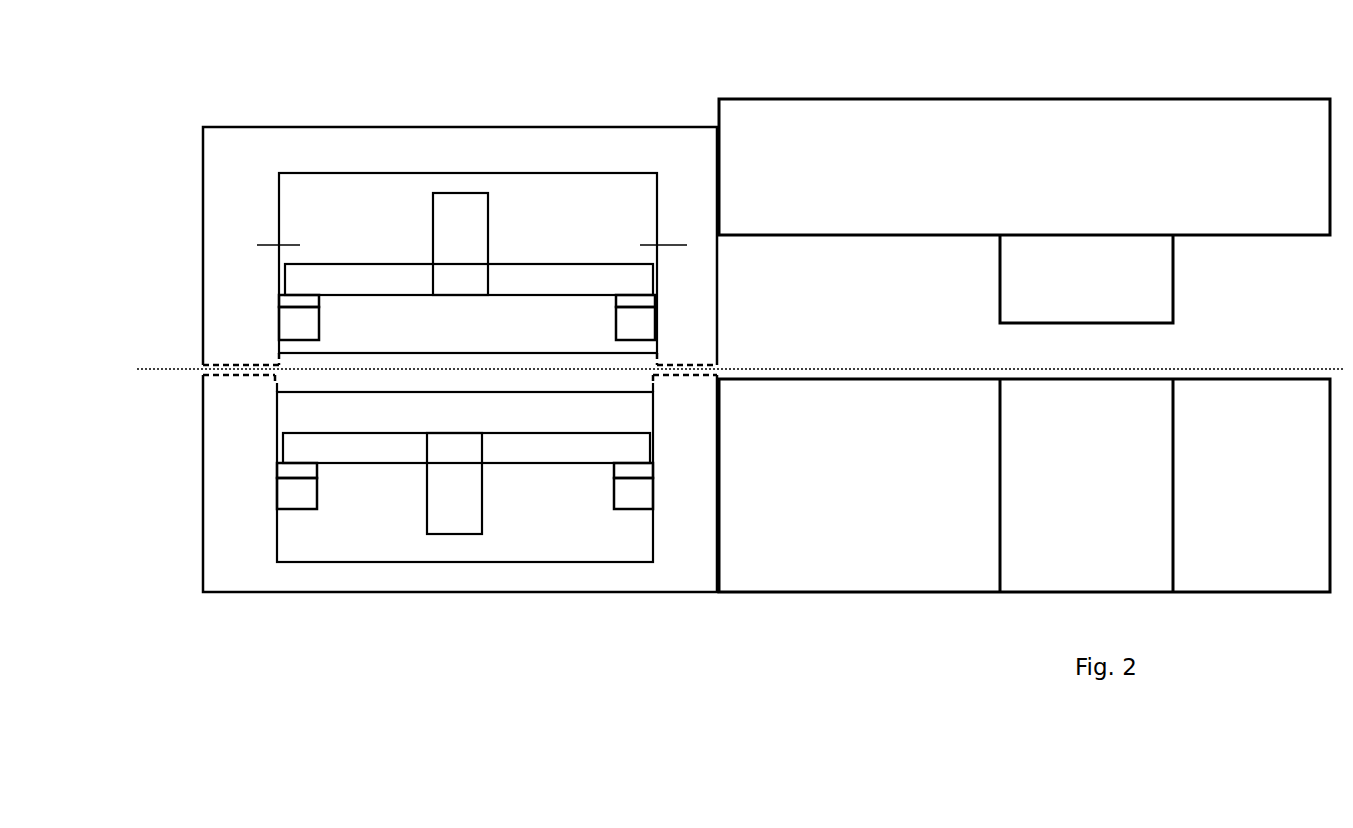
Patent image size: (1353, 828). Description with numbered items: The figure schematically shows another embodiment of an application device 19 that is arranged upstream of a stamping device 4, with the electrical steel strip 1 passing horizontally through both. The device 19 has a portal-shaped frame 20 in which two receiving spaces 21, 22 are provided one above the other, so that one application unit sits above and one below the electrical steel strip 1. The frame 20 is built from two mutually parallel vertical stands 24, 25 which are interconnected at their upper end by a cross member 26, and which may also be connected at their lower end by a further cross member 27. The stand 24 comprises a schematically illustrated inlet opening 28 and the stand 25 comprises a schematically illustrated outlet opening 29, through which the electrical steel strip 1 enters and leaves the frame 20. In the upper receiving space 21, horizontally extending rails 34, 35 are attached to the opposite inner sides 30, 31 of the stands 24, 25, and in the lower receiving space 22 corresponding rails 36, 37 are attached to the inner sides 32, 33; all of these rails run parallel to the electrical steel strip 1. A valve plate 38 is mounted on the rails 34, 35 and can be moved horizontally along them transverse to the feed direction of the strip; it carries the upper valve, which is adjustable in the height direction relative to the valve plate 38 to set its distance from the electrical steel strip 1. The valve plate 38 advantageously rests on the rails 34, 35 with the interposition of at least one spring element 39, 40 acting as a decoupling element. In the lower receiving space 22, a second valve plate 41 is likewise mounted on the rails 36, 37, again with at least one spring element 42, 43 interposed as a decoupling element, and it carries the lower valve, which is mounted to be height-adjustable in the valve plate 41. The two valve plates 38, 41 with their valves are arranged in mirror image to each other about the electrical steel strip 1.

The electrical steel strip 1 is at (767, 366).
The stamping device 4 is at (1156, 79).
The device 19 is at (408, 84).
The portal-shaped frame 20 is at (460, 251).
The receiving space 21 is at (562, 192).
The receiving space 22 is at (528, 550).
The vertical stand 24 is at (294, 244).
The vertical stand 25 is at (647, 244).
The cross member 26 is at (435, 138).
The cross member 27 is at (333, 580).
The inlet opening 28 is at (253, 378).
The outlet opening 29 is at (675, 380).
The inner side 30 is at (283, 200).
The inner side 31 is at (657, 200).
The inner side 32 is at (278, 533).
The inner side 33 is at (653, 527).
The rail 34 is at (298, 328).
The rail 35 is at (640, 325).
The rail 36 is at (298, 497).
The rail 37 is at (630, 497).
The valve plate 38 is at (535, 275).
The spring element 39 is at (300, 300).
The spring element 40 is at (637, 302).
The valve plate 41 is at (500, 450).
The spring element 42 is at (298, 470).
The spring element 43 is at (632, 470).